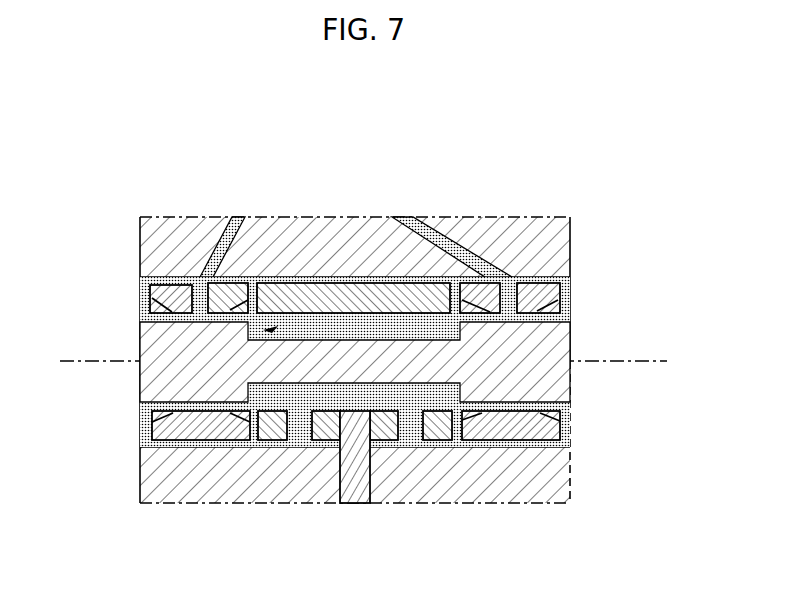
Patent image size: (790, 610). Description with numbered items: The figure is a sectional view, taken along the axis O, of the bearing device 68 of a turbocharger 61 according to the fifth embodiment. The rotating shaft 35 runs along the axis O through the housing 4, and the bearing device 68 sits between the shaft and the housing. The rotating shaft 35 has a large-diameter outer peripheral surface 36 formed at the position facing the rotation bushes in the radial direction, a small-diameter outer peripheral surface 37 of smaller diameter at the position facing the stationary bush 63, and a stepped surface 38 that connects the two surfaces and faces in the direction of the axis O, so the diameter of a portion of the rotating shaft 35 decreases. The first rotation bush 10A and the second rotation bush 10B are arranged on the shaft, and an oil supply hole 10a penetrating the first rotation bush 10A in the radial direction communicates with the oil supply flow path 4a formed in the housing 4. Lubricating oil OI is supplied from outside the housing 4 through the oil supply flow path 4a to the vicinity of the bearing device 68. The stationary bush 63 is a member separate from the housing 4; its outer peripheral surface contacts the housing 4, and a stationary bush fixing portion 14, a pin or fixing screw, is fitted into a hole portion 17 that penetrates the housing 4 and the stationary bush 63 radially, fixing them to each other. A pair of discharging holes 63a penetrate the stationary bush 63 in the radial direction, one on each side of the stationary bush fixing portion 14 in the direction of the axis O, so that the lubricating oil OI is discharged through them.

The housing 4 is at (556, 469).
The oil supply flow path 4a is at (253, 300).
The first rotation bush 10A is at (210, 428).
The second rotation bush 10B is at (515, 428).
The oil supply hole 10a is at (157, 289).
The stationary bush fixing portion 14 is at (360, 462).
The hole portion 17 is at (362, 462).
The rotating shaft 35 is at (545, 382).
The large-diameter outer peripheral surface 36 is at (160, 320).
The small-diameter outer peripheral surface 37 is at (335, 315).
The stepped surface 38 is at (200, 298).
The turbocharger 61 is at (559, 141).
The stationary bush 63 is at (380, 293).
The discharging holes 63a is at (292, 427).
The bearing device 68 is at (479, 191).
The axis O is at (643, 359).
The lubricating oil OI is at (265, 331).